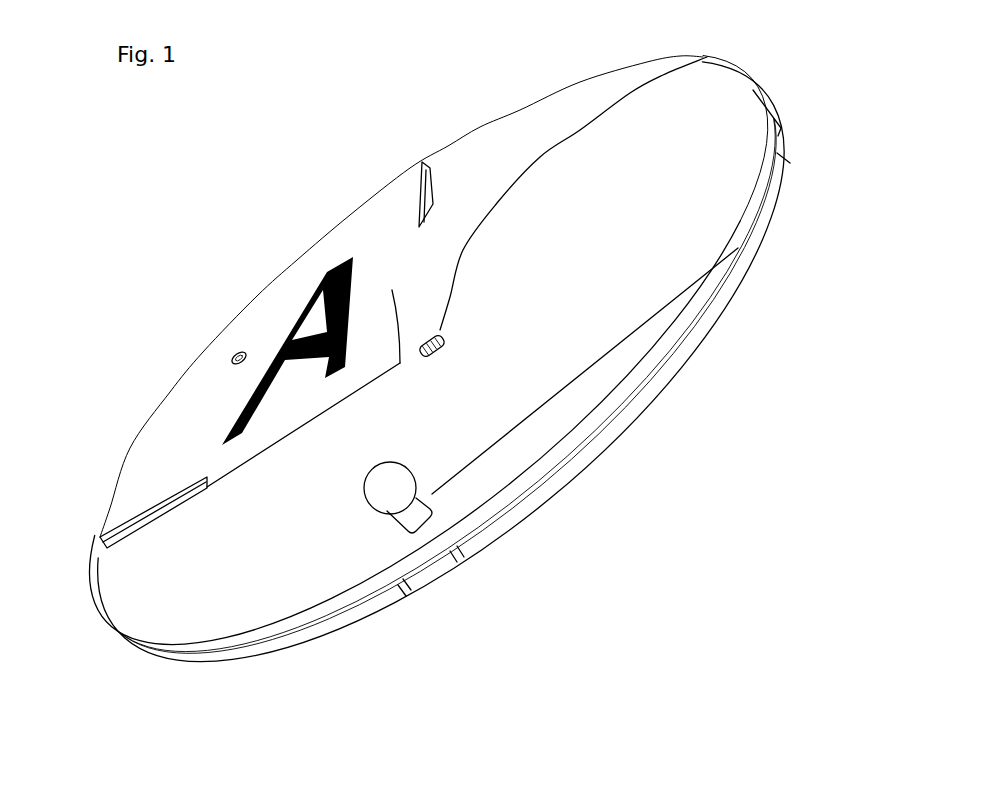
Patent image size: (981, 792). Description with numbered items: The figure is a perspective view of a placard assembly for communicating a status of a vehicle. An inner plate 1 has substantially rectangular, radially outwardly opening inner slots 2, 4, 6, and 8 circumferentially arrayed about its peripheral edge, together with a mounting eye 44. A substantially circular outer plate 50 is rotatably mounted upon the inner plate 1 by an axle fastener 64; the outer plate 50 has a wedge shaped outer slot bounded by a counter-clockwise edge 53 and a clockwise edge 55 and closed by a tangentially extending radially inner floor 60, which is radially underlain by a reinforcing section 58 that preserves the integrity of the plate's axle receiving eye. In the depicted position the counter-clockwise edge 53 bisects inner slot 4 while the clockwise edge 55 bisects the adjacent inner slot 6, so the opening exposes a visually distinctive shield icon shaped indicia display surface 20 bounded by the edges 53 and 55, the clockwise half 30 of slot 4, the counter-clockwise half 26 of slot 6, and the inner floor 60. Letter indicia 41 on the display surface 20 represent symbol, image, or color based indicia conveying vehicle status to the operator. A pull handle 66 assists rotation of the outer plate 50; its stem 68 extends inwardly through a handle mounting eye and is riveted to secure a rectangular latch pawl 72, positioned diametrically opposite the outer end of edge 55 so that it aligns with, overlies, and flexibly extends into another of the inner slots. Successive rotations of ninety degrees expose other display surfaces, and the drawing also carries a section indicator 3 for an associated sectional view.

The inner plate 1 is at (757, 240).
The inner slot 2 is at (455, 548).
The lid 3 is at (447, 55).
The inner slot 4 is at (121, 478).
The clockwise half of inner slot 4 30 is at (153, 508).
The inner slot 6 is at (345, 169).
The counter-clockwise half of inner slot 6 26 is at (422, 162).
The inner slot 8 is at (778, 137).
The indicia display surface 20 is at (214, 413).
The letter indicia 41 is at (312, 296).
The mounting eye 44 is at (240, 355).
The outer plate 50 is at (217, 585).
The counter-clockwise edge of outer slot 53 is at (220, 477).
The clockwise edge of outer slot 55 is at (442, 228).
The reinforcing section 58 is at (430, 327).
The radially inner floor of outer slot 60 is at (392, 290).
The axle fastener 64 is at (703, 57).
The pull handle 66 is at (395, 468).
The handle stem 68 is at (421, 497).
The latch pawl 72 is at (445, 562).